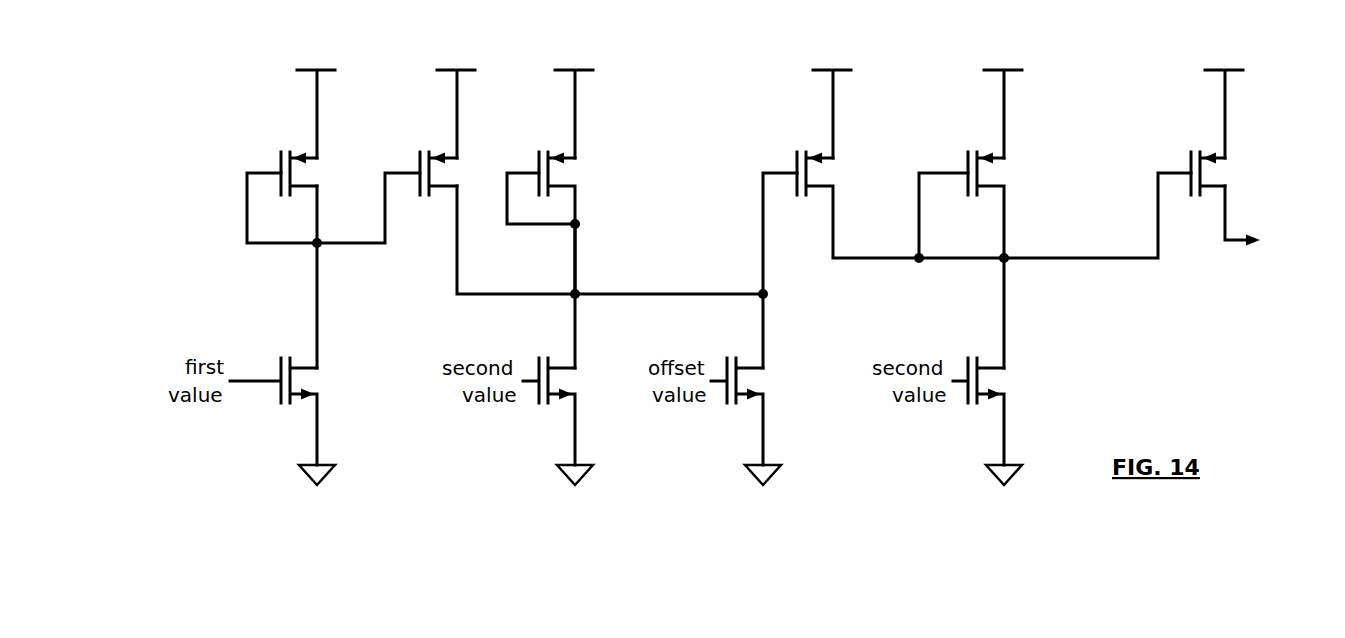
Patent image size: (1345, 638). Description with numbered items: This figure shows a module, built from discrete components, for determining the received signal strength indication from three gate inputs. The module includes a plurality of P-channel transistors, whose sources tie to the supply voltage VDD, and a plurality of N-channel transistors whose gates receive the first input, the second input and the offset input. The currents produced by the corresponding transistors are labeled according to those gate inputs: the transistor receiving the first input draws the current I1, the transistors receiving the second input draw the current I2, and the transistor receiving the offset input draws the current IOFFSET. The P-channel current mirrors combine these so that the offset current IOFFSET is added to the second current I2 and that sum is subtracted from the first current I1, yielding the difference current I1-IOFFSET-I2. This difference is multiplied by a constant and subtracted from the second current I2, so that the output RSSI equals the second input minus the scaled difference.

The supply voltage VDD is at (770, 98).
The first value current I1 is at (510, 312).
The difference value current I1-IOFFSET-I2 is at (592, 244).
The second value current I2 is at (1022, 330).
The offset value current IOFFSET is at (782, 349).
The received signal strength indication output RSSI is at (1215, 248).